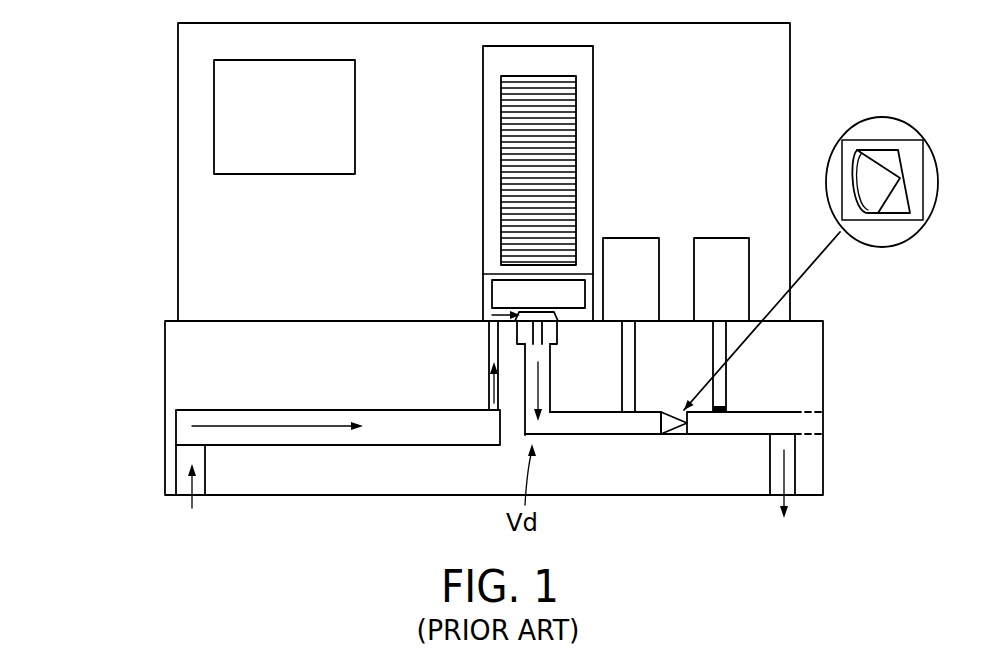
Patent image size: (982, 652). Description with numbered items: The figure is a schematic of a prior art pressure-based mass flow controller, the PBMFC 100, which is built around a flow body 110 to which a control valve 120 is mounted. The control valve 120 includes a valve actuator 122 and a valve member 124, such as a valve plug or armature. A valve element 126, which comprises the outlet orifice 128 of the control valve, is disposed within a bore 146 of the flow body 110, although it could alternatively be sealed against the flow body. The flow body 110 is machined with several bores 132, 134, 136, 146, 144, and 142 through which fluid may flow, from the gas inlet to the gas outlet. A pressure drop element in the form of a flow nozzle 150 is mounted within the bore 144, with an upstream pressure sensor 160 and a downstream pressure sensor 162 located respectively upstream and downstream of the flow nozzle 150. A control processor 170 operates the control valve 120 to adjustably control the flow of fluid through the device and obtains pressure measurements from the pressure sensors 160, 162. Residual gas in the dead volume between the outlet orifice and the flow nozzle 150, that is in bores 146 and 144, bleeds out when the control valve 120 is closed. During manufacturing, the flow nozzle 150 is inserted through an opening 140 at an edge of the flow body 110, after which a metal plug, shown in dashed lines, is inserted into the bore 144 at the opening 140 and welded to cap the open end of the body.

The pressure-based mass flow controller 100 is at (97, 127).
The flow body 110 is at (185, 345).
The control valve 120 is at (593, 80).
The valve actuator 122 is at (527, 180).
The valve member 124 is at (495, 288).
The valve element 126 is at (560, 313).
The outlet orifice 128 is at (532, 345).
The bore 132 is at (178, 470).
The bore 134 is at (357, 410).
The bore 136 is at (487, 352).
The opening 140 is at (833, 420).
The bore 142 is at (796, 460).
The bore 144 is at (595, 437).
The bore 146 is at (553, 392).
The flow nozzle 150 is at (915, 128).
The upstream pressure sensor 160 is at (657, 236).
The downstream pressure sensor 162 is at (756, 244).
The control processor 170 is at (259, 138).